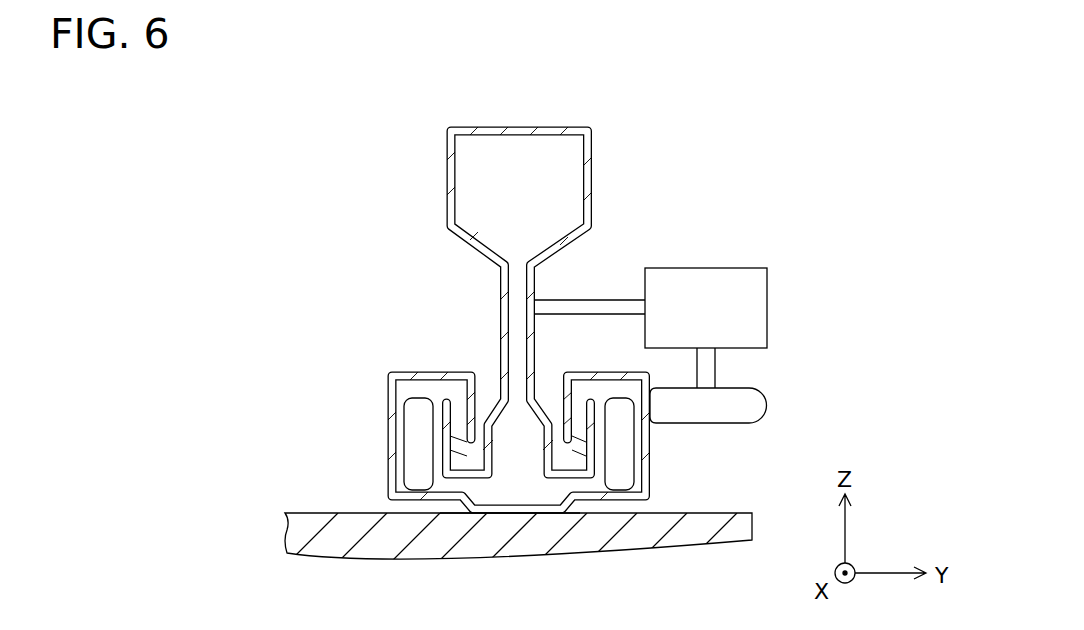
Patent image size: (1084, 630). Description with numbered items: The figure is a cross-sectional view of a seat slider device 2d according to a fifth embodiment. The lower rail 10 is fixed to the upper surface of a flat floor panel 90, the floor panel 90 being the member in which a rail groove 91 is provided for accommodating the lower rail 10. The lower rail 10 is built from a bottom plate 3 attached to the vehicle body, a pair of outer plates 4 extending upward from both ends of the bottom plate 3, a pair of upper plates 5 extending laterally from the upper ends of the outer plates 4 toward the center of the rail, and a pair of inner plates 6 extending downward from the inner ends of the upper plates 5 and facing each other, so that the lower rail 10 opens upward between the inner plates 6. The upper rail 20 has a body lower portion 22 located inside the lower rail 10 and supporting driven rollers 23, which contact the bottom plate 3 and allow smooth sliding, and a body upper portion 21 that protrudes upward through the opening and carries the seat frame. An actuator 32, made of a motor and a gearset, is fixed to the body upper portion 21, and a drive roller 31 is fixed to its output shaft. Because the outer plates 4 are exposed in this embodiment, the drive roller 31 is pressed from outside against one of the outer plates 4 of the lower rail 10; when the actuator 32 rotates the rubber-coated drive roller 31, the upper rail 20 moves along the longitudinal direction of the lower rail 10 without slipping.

The seat slider device 2d is at (331, 110).
The upper rail 20 is at (519, 346).
The body upper portion 21 is at (540, 127).
The body lower portion 22 is at (497, 458).
The driven rollers 23 is at (414, 478).
The bottom plate 3 is at (546, 502).
The outer plates 4 is at (394, 436).
The upper plates 5 is at (418, 372).
The inner plates 6 is at (477, 397).
The lower rail 10 is at (499, 430).
The drive roller 31 is at (768, 404).
The actuator 32 is at (768, 300).
The floor panel 90 is at (533, 566).
The rail groove 91 is at (450, 507).